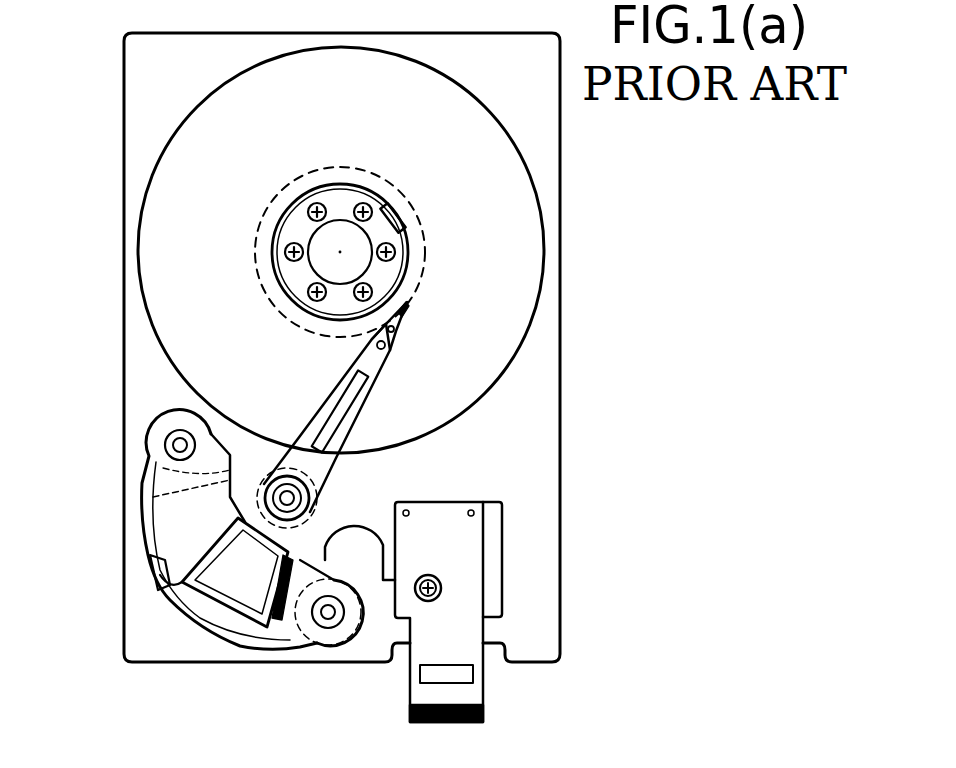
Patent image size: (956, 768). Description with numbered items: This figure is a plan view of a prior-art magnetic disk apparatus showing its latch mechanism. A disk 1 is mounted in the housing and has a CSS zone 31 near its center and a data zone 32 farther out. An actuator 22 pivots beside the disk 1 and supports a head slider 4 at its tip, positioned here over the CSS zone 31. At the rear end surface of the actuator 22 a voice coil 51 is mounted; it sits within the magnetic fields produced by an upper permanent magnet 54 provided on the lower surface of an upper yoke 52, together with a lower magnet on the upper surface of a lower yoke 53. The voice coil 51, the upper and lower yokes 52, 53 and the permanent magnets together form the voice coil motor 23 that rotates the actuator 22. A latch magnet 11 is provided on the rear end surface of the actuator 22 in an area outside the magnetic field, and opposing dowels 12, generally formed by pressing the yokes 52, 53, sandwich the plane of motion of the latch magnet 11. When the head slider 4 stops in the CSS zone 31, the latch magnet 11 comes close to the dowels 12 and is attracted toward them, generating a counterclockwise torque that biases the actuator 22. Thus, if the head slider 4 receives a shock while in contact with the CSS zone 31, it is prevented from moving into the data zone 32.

The disk 1 is at (455, 93).
The data zone 32 is at (483, 172).
The CSS zone 31 is at (392, 192).
The head slider 4 is at (410, 298).
The actuator 22 is at (313, 410).
The voice coil motor 23 is at (230, 640).
The voice coil 51 is at (208, 555).
The upper yoke 52 is at (297, 640).
The lower yoke 53 is at (142, 488).
The upper permanent magnet 54 is at (145, 528).
The latch magnet 11 is at (152, 560).
The dowels 12 is at (170, 595).